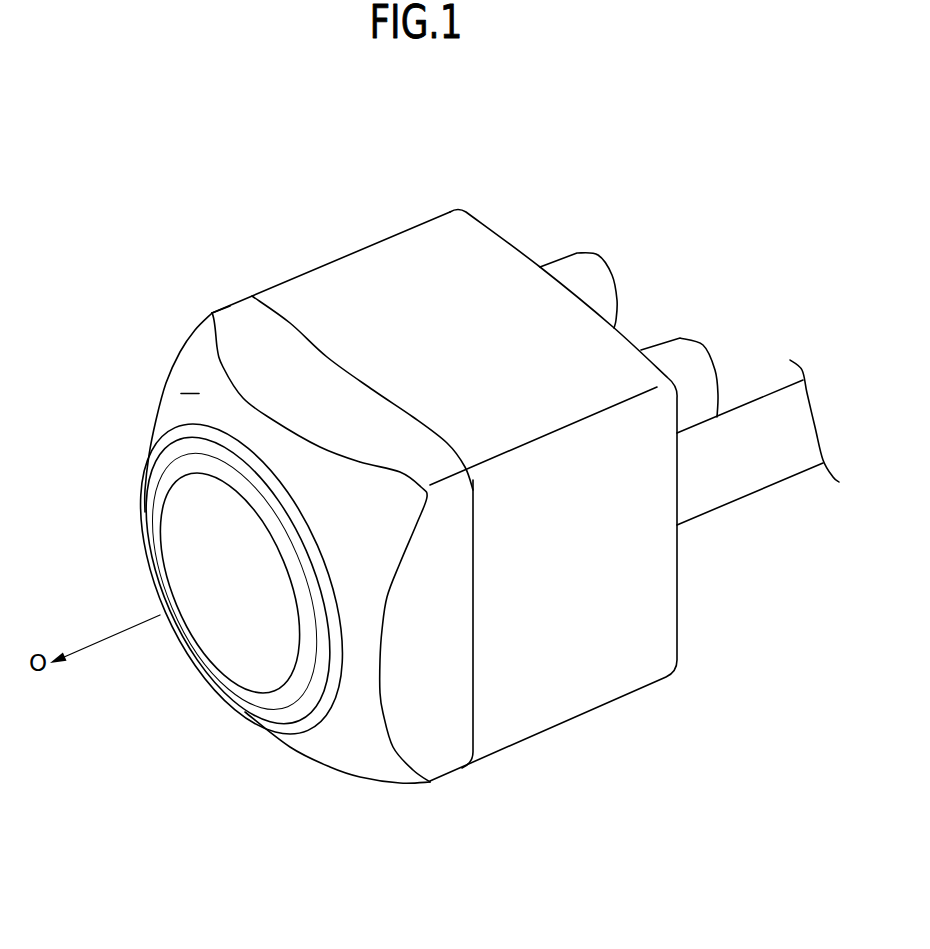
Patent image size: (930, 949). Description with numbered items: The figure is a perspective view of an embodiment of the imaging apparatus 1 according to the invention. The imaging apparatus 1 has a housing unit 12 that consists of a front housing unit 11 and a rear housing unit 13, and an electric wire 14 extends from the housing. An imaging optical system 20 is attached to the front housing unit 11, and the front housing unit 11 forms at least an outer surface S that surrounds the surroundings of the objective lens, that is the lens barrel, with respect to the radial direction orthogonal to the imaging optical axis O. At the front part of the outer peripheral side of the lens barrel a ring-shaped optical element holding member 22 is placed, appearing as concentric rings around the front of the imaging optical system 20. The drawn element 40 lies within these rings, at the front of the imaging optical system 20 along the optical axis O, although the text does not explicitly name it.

The imaging apparatus 1 is at (230, 238).
The front housing unit 11 is at (227, 303).
The housing unit 12 is at (318, 205).
The rear housing unit 13 is at (379, 236).
The electric wire 14 is at (752, 422).
The imaging optical system 20 is at (171, 713).
The optical element holding member 22 is at (252, 712).
The lens 40 is at (177, 540).